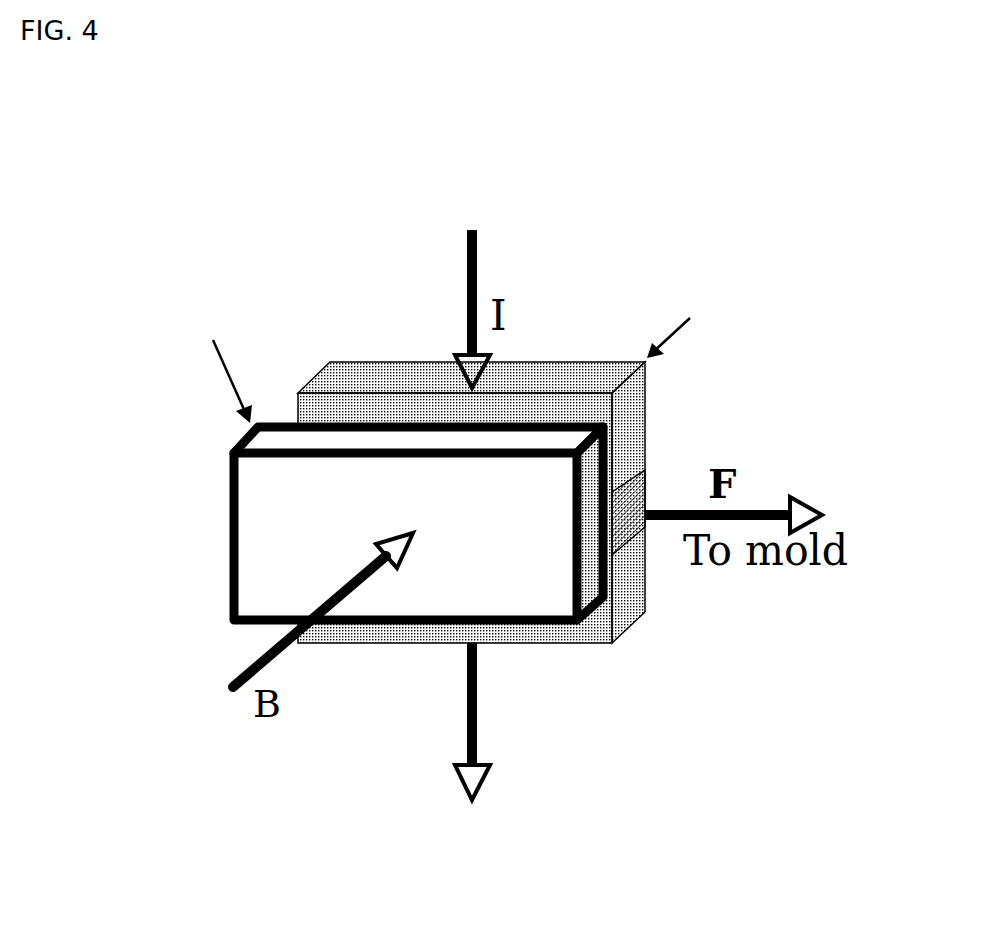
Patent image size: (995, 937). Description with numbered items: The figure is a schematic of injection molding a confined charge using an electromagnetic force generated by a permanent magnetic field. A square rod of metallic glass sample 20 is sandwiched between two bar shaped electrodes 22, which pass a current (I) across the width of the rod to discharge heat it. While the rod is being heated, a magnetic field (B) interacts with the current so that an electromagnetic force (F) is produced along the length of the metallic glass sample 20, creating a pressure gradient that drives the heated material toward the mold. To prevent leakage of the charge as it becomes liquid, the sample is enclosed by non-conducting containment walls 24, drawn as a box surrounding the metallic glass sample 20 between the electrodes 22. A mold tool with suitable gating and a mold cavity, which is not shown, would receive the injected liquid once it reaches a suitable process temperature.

The metallic glass sample 20 is at (631, 503).
The bar shaped electrodes 22 is at (307, 603).
The non-conducting containment walls 24 is at (515, 597).